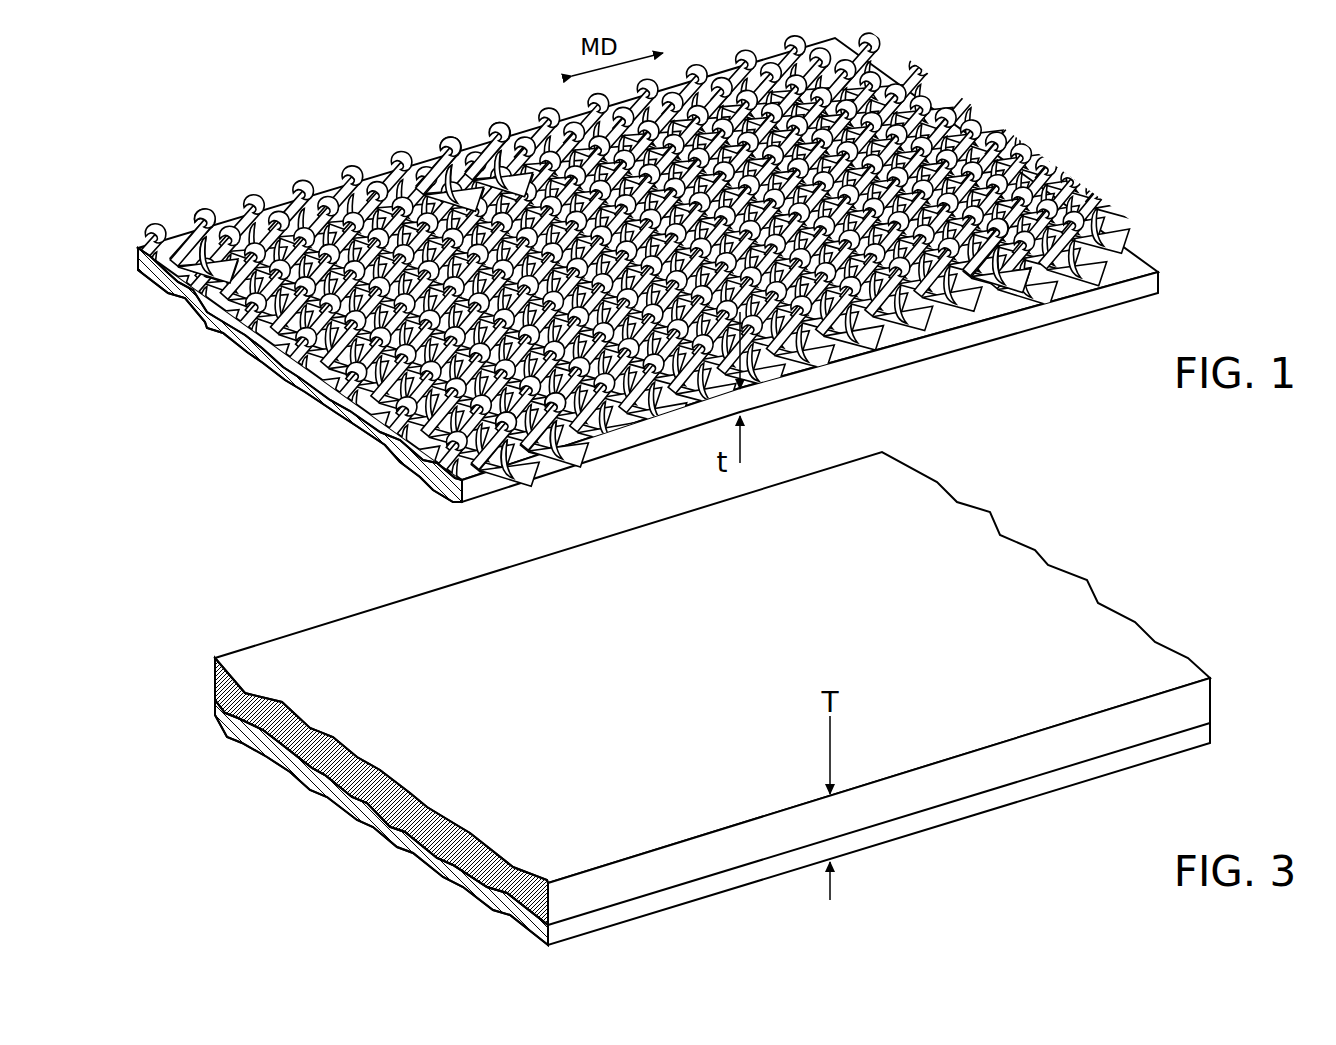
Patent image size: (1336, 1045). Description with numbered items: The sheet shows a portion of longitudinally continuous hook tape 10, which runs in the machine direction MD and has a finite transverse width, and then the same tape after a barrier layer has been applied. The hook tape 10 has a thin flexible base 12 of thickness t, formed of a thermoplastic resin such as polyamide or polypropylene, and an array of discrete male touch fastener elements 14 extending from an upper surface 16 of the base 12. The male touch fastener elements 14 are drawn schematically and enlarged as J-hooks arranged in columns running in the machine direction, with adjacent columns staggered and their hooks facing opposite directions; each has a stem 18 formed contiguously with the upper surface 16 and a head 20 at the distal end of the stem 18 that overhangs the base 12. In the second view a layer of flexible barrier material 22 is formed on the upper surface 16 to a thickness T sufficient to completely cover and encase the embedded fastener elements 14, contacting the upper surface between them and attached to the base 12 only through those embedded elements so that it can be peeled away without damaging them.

In FIG. 1, the hook tape 10 is at (632, 274).
In FIG. 1, the flexible base 12 is at (823, 396).
In FIG. 3, the flexible base 12 is at (1030, 806).
In FIG. 1, the male touch fastener elements 14 is at (207, 207).
In FIG. 1, the upper surface 16 is at (1000, 305).
In FIG. 1, the stem 18 is at (570, 423).
In FIG. 1, the head 20 is at (500, 120).
In FIG. 3, the layer of flexible barrier material 22 is at (352, 606).